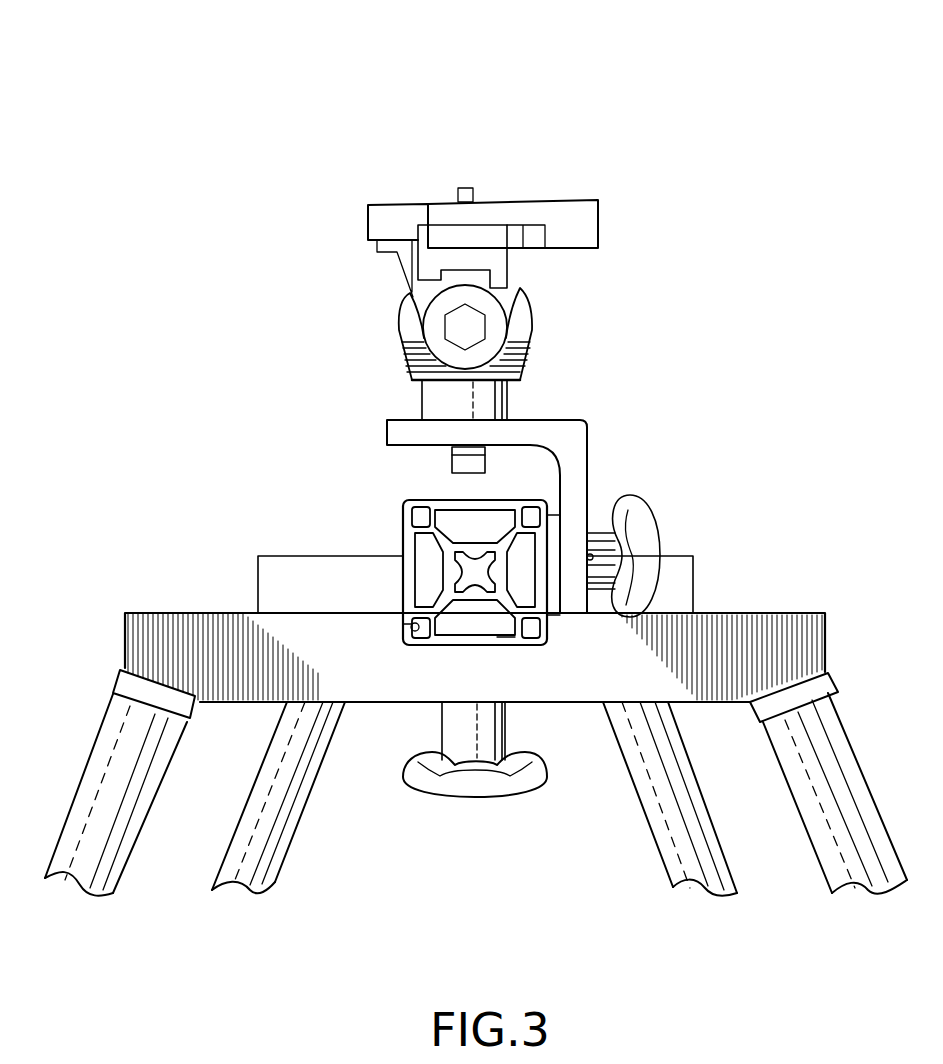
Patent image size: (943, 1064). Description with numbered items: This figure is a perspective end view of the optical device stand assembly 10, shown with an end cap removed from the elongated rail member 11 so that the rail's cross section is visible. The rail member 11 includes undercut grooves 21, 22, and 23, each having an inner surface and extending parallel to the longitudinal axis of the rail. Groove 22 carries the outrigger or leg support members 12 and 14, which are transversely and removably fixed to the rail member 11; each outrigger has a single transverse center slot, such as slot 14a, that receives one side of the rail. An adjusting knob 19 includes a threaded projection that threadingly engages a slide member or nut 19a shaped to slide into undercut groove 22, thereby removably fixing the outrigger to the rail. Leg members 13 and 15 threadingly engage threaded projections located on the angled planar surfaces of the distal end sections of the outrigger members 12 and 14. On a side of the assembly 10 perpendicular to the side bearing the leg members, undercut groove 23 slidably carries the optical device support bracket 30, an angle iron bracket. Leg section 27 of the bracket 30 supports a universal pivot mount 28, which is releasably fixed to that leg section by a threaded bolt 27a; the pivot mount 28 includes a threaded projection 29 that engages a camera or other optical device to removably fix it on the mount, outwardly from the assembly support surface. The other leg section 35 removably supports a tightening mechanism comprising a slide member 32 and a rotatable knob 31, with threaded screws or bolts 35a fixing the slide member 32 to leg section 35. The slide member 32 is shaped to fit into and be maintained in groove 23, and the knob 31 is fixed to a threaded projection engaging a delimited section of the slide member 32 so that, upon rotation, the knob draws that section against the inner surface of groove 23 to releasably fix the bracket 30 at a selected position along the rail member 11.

The optical device stand assembly 10 is at (662, 195).
The elongated rail member 11 is at (405, 505).
The outrigger or leg support member 12 is at (300, 555).
The leg member 13 is at (288, 857).
The outrigger or leg support member 14 is at (627, 685).
The transverse center slot 14a is at (402, 623).
The leg member 15 is at (860, 767).
The adjusting knob 19 is at (498, 797).
The slide member or nut 19a is at (470, 625).
The undercut groove 21 is at (445, 575).
The undercut groove 22 is at (413, 622).
The undercut groove 23 is at (500, 637).
The leg section 27 is at (530, 432).
The threaded bolt 27a is at (465, 460).
The universal pivot mount 28 is at (550, 338).
The threaded projection 29 is at (462, 188).
The optical device support bracket 30 is at (385, 428).
The rotatable knob 31 is at (655, 528).
The slide member 32 is at (522, 550).
The leg section 35 is at (572, 505).
The threaded screws or bolts 35a is at (593, 557).